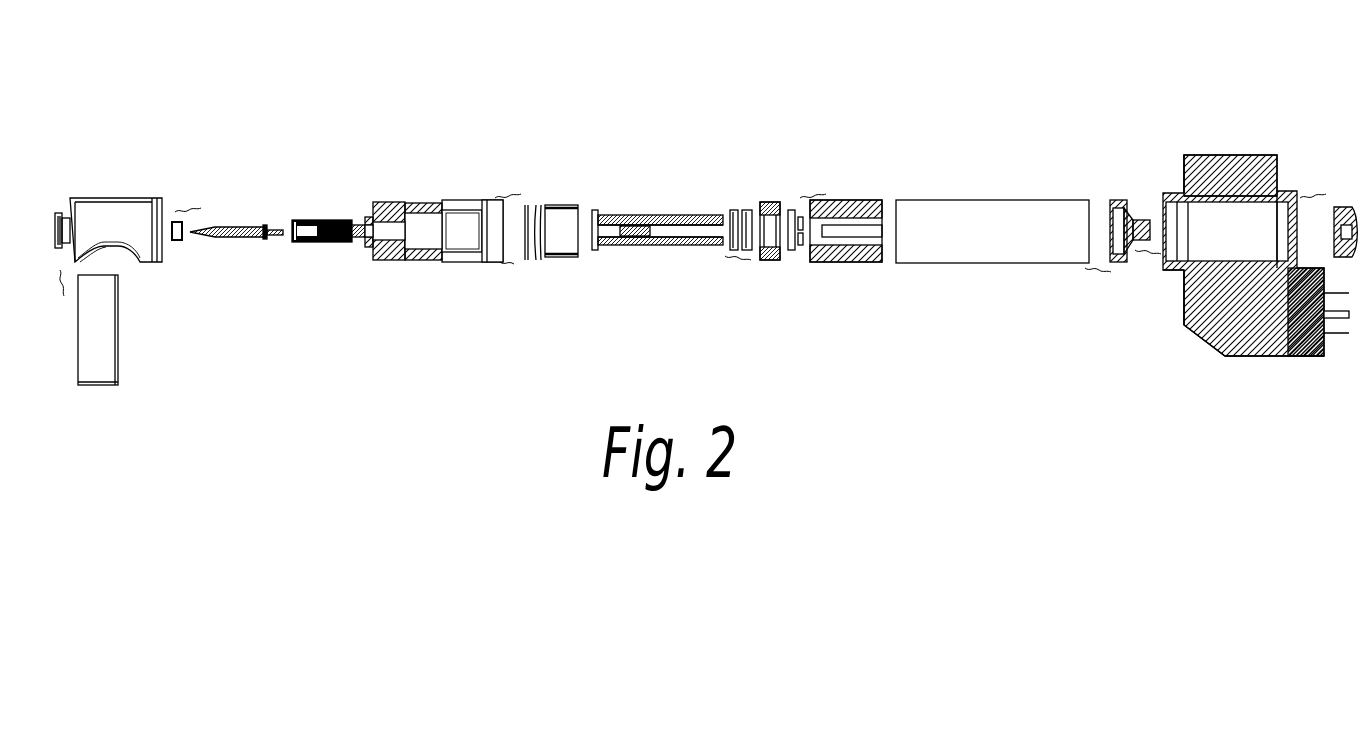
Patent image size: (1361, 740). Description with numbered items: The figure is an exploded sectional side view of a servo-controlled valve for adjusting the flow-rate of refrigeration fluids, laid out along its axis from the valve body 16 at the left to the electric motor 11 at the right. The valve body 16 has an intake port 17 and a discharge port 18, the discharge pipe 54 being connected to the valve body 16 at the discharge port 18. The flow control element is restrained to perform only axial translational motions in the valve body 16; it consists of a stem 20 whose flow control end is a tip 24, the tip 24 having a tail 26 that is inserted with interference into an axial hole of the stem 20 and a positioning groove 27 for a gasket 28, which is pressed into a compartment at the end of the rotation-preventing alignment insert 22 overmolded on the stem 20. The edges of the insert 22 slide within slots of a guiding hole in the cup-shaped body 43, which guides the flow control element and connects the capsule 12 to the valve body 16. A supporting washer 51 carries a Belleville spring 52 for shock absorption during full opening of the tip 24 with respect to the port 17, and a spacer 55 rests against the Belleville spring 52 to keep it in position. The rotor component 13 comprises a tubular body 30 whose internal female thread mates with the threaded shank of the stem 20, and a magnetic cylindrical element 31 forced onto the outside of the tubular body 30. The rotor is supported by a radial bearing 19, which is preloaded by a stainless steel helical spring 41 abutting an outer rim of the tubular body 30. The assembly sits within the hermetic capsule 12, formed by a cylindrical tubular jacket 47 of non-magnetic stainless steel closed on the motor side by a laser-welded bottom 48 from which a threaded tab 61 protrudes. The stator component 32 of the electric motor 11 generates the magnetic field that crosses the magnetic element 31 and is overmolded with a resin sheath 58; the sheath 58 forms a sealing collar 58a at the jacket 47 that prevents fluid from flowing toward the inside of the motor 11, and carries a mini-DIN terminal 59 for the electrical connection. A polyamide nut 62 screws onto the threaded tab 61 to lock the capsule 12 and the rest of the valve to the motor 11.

The electric motor 11 is at (1197, 236).
The hermetic enclosure capsule 12 is at (1147, 283).
The rotor component 13 is at (882, 283).
The valve body 16 is at (103, 197).
The intake port 17 is at (56, 228).
The discharge port 18 is at (107, 247).
The radial bearing 19 is at (773, 195).
The stem 20 is at (452, 220).
The rotation-preventing alignment insert 22 is at (325, 220).
The tip 24 is at (227, 217).
The tail 26 is at (276, 240).
The positioning groove 27 is at (264, 222).
The gasket 28 is at (181, 240).
The tubular body 30 is at (658, 200).
The magnetic cylindrical element 31 is at (842, 193).
The stator component 32 is at (1196, 173).
The helical spring 41 is at (740, 210).
The cup-shaped body 43 is at (420, 200).
The cylindrical tubular jacket 47 is at (940, 200).
The bottom 48 is at (1120, 200).
The supporting washer 51 is at (525, 260).
The Belleville spring 52 is at (538, 262).
The discharge pipe 54 is at (122, 352).
The spacer 55 is at (562, 205).
The protective sheath 58 is at (1232, 347).
The sealing collar 58a is at (1177, 278).
The terminal 59 is at (1304, 350).
The threaded tab 61 is at (1152, 220).
The nut 62 is at (1345, 207).